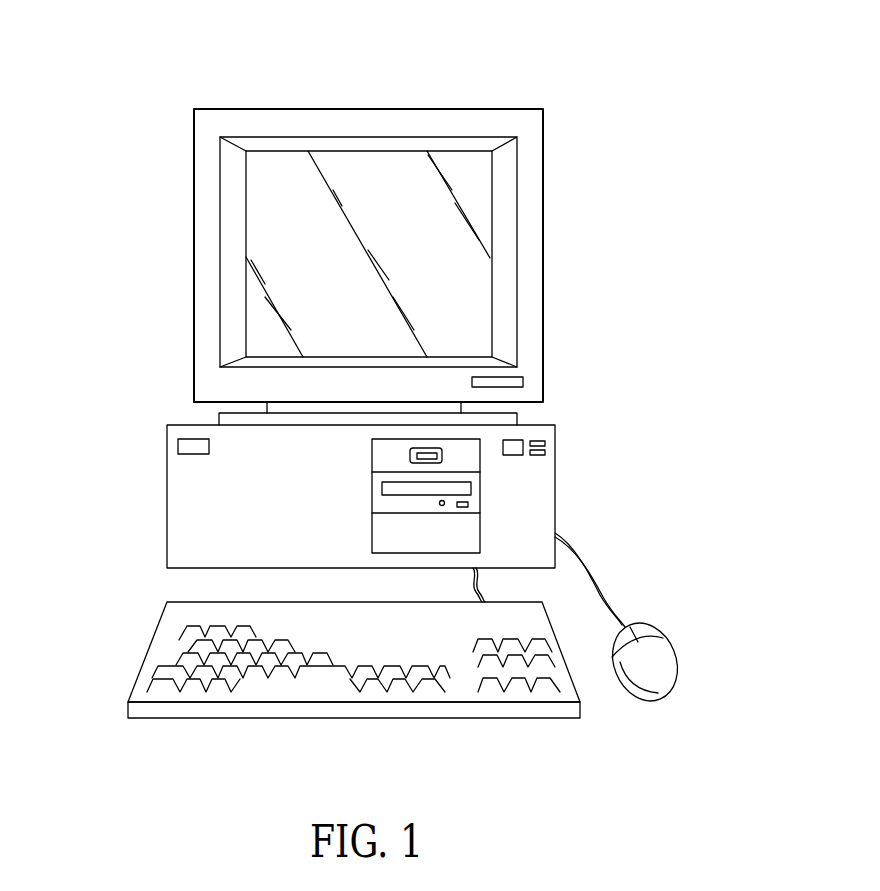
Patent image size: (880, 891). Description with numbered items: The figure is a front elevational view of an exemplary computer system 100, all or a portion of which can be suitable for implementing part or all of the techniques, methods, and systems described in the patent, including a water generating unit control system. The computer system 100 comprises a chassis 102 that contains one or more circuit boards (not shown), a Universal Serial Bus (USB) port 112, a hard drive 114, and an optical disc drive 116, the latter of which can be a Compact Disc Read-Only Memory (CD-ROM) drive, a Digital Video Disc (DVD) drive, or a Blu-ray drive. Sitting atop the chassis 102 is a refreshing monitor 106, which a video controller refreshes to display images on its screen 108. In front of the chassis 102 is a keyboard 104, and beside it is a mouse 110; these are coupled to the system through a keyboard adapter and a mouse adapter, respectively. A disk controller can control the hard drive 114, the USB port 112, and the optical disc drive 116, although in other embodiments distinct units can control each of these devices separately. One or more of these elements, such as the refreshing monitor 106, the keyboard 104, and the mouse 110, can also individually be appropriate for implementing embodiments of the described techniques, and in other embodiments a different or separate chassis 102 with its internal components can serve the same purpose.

The computer system 100 is at (539, 85).
The chassis 102 is at (167, 498).
The keyboard 104 is at (148, 643).
The refreshing monitor 106 is at (265, 108).
The screen 108 is at (290, 257).
The mouse 110 is at (660, 653).
The Universal Serial Bus (USB) port 112 is at (442, 452).
The hard drive 114 is at (472, 532).
The optical disc drive 116 is at (472, 495).